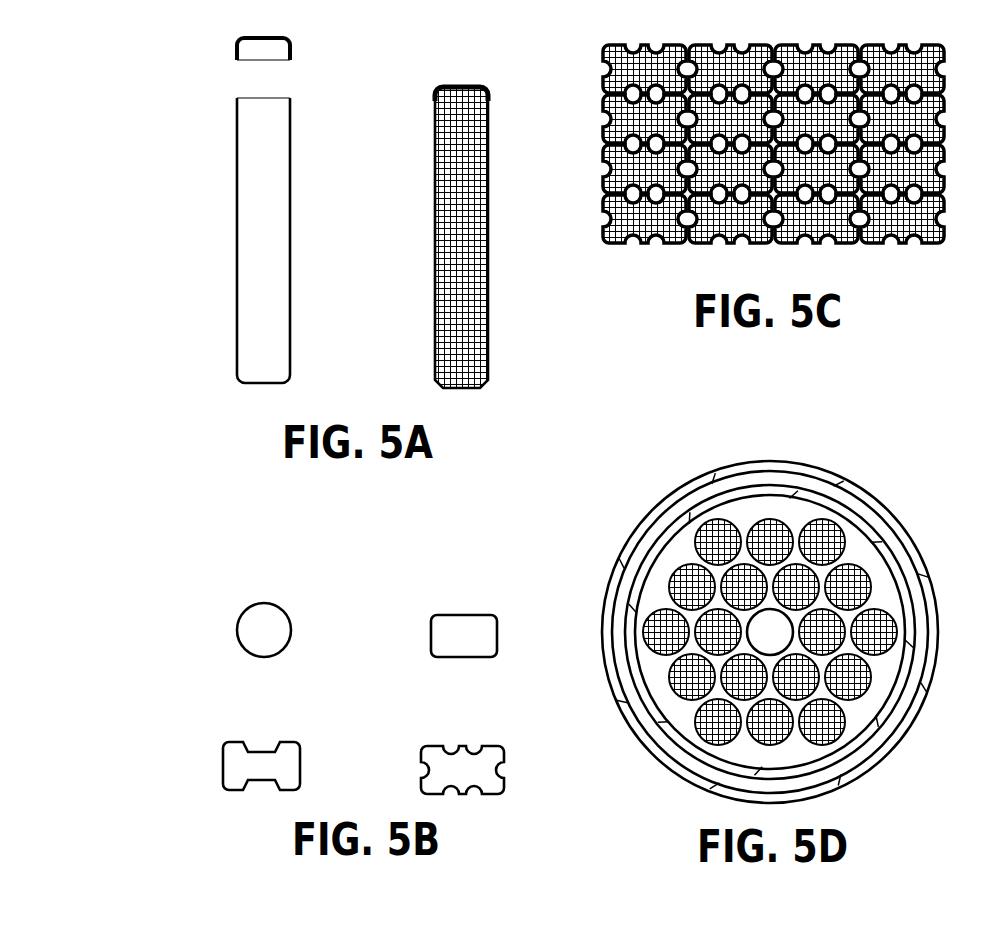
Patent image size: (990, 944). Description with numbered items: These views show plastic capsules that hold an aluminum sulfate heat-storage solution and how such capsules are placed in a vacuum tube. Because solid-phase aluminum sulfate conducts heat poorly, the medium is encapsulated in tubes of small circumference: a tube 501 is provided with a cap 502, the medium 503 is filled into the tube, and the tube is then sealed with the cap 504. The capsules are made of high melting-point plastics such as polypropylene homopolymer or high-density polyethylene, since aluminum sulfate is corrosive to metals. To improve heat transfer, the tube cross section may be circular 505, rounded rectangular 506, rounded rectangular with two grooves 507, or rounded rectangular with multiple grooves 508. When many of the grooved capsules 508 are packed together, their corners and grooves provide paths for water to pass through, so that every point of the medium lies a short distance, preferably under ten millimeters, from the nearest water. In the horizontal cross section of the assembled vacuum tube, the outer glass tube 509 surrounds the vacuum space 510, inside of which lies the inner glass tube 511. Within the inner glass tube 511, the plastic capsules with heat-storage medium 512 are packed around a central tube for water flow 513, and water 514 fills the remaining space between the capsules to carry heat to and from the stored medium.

In FIG. 5A, the tube 501 is at (235, 160).
In FIG. 5A, the cap 502 is at (235, 57).
In FIG. 5A, the filled medium 503 is at (450, 260).
In FIG. 5A, the sealed cap 504 is at (435, 100).
In FIG. 5B, the circular cross section 505 is at (238, 615).
In FIG. 5B, the rounded rectangular cross section 506 is at (430, 620).
In FIG. 5B, the rounded rectangular cross section with two grooves 507 is at (223, 742).
In FIG. 5B, the rounded rectangular cross section with multiple grooves 508 is at (423, 750).
In FIG. 5C, the rounded rectangular cross section with multiple grooves 508 is at (643, 246).
In FIG. 5D, the outer glass tube 509 is at (643, 527).
In FIG. 5D, the vacuum space 510 is at (690, 508).
In FIG. 5D, the inner glass tube 511 is at (753, 490).
In FIG. 5D, the plastic capsules with heat-storage medium 512 is at (817, 540).
In FIG. 5D, the central tube for water flow 513 is at (772, 632).
In FIG. 5D, the water 514 is at (883, 583).